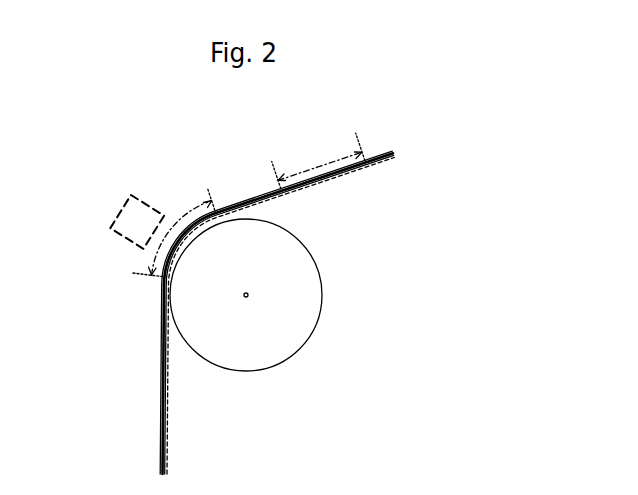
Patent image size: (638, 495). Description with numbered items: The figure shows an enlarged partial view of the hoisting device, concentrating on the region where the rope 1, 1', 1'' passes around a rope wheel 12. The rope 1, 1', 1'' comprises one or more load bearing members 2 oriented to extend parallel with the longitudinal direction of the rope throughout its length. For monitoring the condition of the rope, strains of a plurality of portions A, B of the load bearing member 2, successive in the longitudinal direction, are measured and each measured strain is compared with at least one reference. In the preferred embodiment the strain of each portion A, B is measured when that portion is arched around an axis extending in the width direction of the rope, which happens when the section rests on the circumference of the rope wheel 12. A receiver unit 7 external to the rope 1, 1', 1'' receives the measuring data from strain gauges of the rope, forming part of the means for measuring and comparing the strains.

The rope 1 is at (161, 403).
The load bearing member 2 is at (168, 447).
The receiver unit 7 is at (125, 245).
The rope wheel 12 is at (290, 340).
The portion of load bearing member A is at (184, 236).
The portion of load bearing member B is at (331, 170).